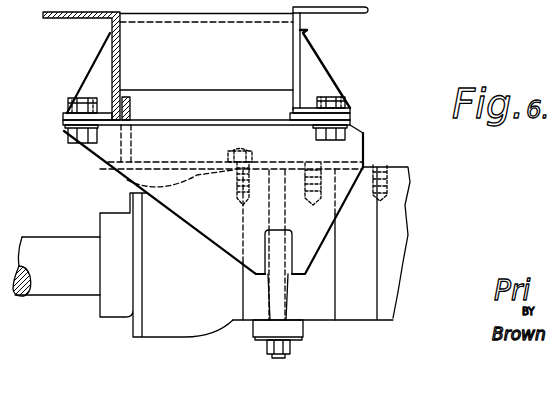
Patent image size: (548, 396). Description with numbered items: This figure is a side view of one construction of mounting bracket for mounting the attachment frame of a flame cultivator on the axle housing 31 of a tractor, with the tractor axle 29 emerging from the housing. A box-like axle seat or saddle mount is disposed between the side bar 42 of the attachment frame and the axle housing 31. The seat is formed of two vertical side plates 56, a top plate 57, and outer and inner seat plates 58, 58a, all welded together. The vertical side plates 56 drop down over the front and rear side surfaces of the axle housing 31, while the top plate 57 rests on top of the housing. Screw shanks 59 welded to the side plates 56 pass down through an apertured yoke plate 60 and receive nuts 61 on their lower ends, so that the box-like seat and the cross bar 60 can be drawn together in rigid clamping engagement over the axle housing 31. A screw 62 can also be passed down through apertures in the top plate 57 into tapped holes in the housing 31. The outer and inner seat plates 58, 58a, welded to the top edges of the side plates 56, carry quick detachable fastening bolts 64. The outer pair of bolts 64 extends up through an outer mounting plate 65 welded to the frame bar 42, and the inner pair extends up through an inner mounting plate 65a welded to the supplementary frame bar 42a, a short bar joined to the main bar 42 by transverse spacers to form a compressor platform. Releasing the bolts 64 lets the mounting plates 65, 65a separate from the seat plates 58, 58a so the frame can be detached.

The shaft 29 is at (49, 248).
The axle housing 31 is at (397, 216).
The side bar 42 is at (108, 30).
The supplementary frame bar 42a is at (300, 25).
The vertical side plate 56 is at (127, 180).
The top plate 57 is at (167, 162).
The outer seat plate 58 is at (63, 123).
The inner seat plate 58a is at (348, 122).
The screw shank 59 is at (281, 303).
The yoke plate 60 is at (253, 328).
The nut 61 is at (268, 349).
The screw 62 is at (240, 150).
The quick detachable fastening bolt 64 is at (78, 100).
The outer mounting plate 65 is at (63, 114).
The inner mounting plate 65a is at (350, 113).